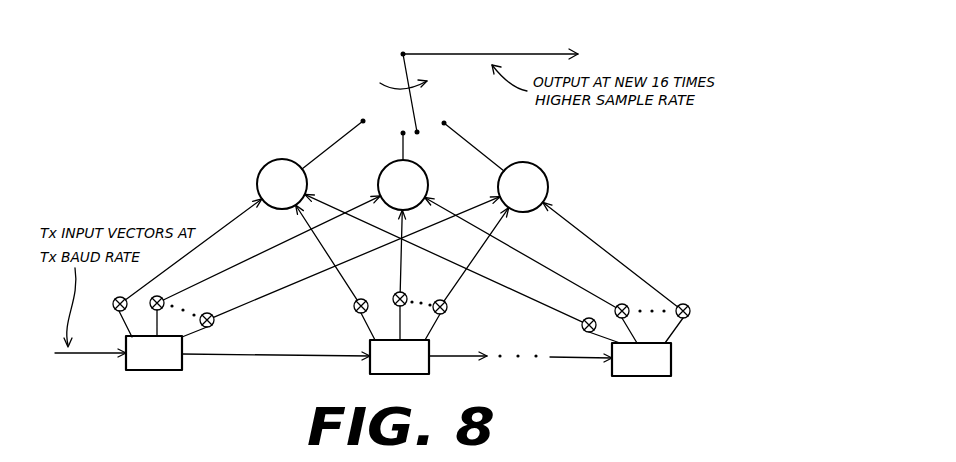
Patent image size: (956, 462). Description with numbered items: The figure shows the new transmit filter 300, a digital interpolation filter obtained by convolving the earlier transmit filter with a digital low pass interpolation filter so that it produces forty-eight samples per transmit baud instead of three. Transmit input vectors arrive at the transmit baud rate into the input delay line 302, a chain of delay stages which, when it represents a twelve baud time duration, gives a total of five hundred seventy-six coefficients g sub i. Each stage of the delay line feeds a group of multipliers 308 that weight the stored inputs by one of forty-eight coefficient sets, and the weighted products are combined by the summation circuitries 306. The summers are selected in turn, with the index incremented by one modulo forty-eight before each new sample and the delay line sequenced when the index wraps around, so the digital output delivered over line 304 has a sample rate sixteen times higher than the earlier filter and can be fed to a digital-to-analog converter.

The new transmit filter 300 is at (620, 200).
The input delay line 302 is at (700, 358).
The output line 304 is at (477, 54).
The summation circuitries 306 is at (422, 166).
The multipliers 308 is at (123, 312).